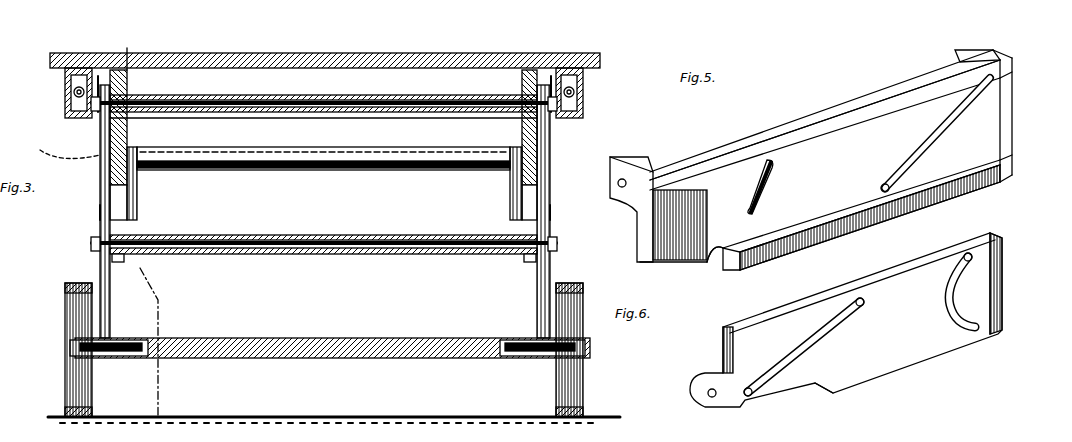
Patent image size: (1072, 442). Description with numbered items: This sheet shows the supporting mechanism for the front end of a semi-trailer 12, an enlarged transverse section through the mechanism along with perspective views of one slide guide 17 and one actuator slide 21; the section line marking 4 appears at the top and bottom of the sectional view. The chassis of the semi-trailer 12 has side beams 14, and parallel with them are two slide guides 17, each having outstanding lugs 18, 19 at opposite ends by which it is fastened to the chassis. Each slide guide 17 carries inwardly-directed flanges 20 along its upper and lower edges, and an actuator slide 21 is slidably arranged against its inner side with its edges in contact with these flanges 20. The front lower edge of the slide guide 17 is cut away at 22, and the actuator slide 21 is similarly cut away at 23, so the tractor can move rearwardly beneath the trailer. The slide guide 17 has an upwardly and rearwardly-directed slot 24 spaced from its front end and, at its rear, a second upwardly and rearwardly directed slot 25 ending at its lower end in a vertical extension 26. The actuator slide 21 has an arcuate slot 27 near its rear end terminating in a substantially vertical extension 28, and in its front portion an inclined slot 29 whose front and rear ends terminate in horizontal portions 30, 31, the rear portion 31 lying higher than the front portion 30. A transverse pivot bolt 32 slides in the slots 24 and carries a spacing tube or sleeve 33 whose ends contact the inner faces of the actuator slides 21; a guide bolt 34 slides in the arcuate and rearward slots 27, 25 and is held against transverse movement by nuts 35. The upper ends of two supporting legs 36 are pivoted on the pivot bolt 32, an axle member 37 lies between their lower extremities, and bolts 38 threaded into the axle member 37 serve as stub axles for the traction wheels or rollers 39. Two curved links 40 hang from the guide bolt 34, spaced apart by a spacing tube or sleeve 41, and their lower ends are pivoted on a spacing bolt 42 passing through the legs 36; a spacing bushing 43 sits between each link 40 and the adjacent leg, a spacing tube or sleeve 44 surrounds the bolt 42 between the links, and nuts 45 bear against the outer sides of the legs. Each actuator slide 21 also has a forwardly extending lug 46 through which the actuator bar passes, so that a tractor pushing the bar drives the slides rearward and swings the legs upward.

In FIG. 3, the section line 4- 4 is at (135, 47).
In FIG. 3, the semi-trailer 12 is at (314, 53).
In FIG. 3, the side beam 14 is at (66, 107).
In FIG. 3, the slide guide 17 is at (111, 127).
In FIG. 5, the slide guide 17 is at (808, 178).
In FIG. 5, the outstanding lug 18 is at (632, 162).
In FIG. 3, the outstanding lug 19 is at (80, 108).
In FIG. 5, the outstanding lug 19 is at (955, 57).
In FIG. 3, the inwardly-directed flange 20 is at (128, 78).
In FIG. 5, the inwardly-directed flange 20 is at (733, 168).
In FIG. 3, the actuator slide 21 is at (130, 128).
In FIG. 6, the actuator slide 21 is at (846, 320).
In FIG. 5, the cut-away 22 is at (703, 258).
In FIG. 6, the cut-away 23 is at (818, 388).
In FIG. 3, the upwardly and rearwardly-directed slot 24 is at (170, 100).
In FIG. 5, the upwardly and rearwardly-directed slot 24 is at (760, 195).
In FIG. 5, the upwardly and rearwardly directed slot 25 is at (938, 126).
In FIG. 5, the vertical extension 26 is at (894, 178).
In FIG. 6, the arcuate slot 27 is at (955, 300).
In FIG. 6, the vertical extension 28 is at (975, 260).
In FIG. 3, the inclined slot 29 is at (200, 435).
In FIG. 6, the inclined slot 29 is at (805, 343).
In FIG. 6, the horizontal portion 30 is at (748, 400).
In FIG. 3, the horizontal portion 31 is at (244, 435).
In FIG. 6, the horizontal portion 31 is at (868, 304).
In FIG. 3, the pivot bolt 32 is at (284, 113).
In FIG. 3, the spacing tube or sleeve 33 is at (350, 113).
In FIG. 3, the guide bolt 34 is at (318, 156).
In FIG. 3, the nut 35 is at (565, 171).
In FIG. 3, the supporting leg 36 is at (100, 212).
In FIG. 3, the axle member 37 is at (334, 337).
In FIG. 3, the bolt 38 is at (112, 336).
In FIG. 3, the traction wheel or roller 39 is at (65, 310).
In FIG. 3, the curved link 40 is at (138, 212).
In FIG. 3, the spacing tube or sleeve 41 is at (390, 169).
In FIG. 3, the spacing bolt 42 is at (273, 256).
In FIG. 3, the spacing bushing 43 is at (118, 262).
In FIG. 3, the spacing tube or sleeve 44 is at (342, 256).
In FIG. 3, the nut 45 is at (90, 252).
In FIG. 6, the forwardly extending lug 46 is at (708, 408).